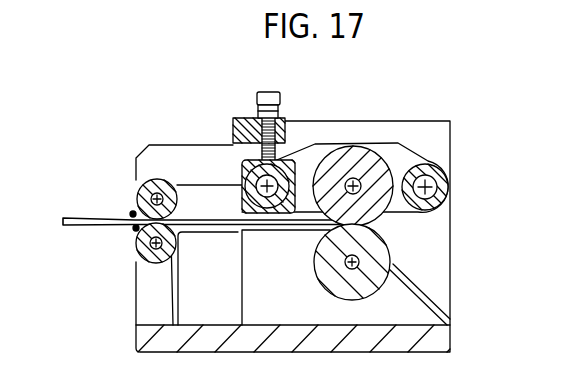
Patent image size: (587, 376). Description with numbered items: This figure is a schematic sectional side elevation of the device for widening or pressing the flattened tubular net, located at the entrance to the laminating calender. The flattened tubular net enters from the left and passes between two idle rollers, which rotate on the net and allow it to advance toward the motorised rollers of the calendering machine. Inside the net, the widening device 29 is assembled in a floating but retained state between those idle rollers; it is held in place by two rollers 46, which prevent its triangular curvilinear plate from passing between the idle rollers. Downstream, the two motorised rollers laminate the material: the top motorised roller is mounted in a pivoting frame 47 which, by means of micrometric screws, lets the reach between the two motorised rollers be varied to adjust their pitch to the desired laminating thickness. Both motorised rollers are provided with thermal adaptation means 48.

The widening device 29 is at (89, 215).
The roller 46 is at (136, 228).
The pivoting frame 47 is at (316, 158).
The thermal adaptation means 48 is at (253, 118).